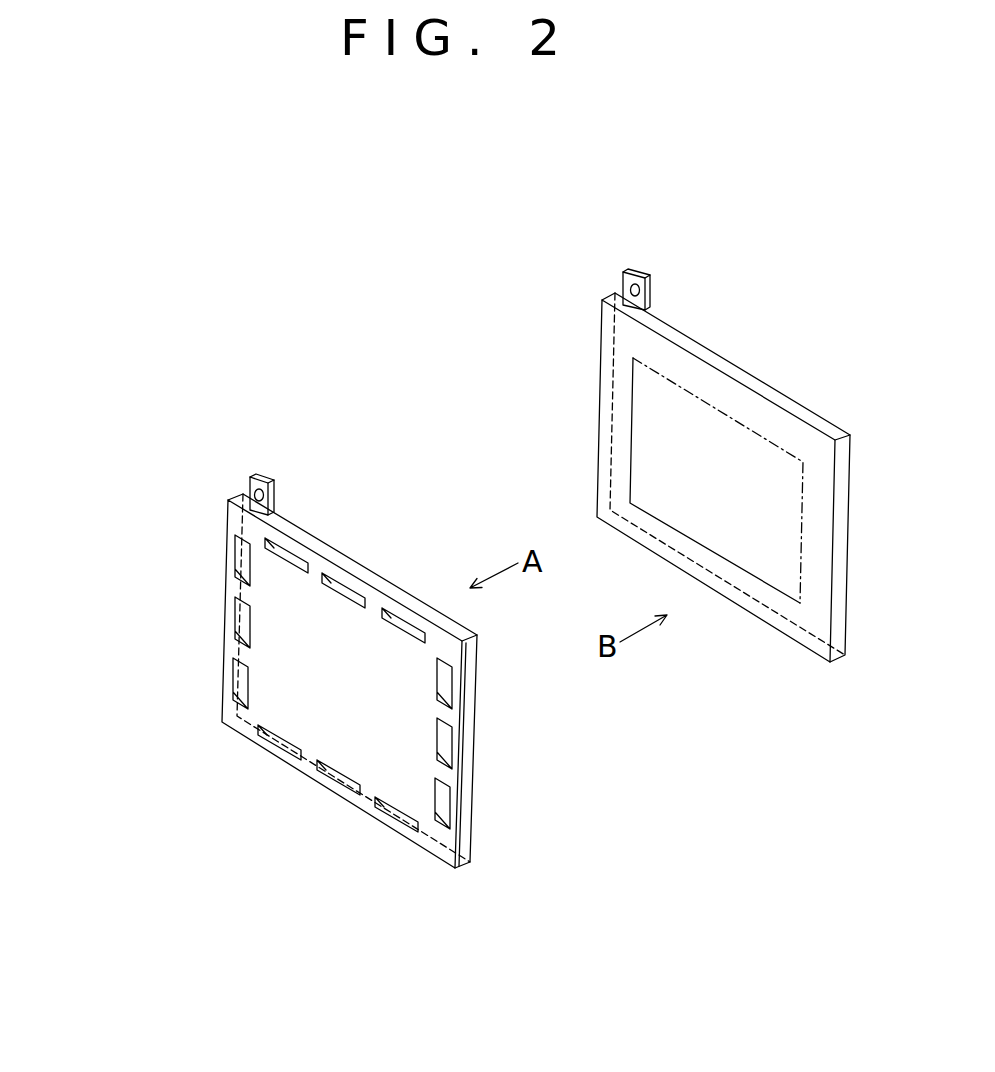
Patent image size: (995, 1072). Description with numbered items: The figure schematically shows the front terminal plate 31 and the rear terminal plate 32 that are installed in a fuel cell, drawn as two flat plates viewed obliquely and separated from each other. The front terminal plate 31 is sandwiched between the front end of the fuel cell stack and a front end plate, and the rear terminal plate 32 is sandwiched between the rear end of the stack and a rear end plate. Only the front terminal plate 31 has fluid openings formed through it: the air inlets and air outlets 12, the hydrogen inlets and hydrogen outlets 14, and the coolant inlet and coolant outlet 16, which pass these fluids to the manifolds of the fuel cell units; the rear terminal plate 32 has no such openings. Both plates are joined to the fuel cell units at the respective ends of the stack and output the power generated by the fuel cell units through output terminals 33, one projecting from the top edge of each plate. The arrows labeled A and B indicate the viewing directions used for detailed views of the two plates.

The air inlets and air outlets 12 is at (397, 628).
The hydrogen inlets and hydrogen outlets 14 is at (240, 566).
The coolant inlet and coolant outlet 16 is at (230, 627).
The front terminal plate 31 is at (334, 556).
The rear terminal plate 32 is at (708, 350).
The output terminals 33 is at (262, 472).